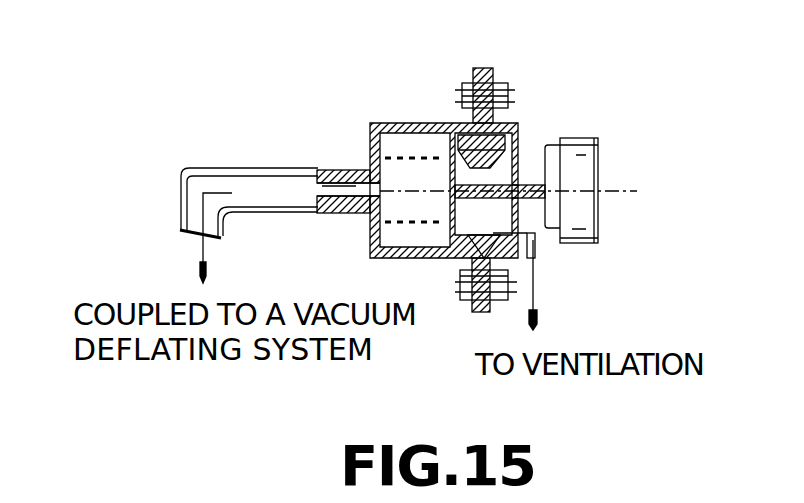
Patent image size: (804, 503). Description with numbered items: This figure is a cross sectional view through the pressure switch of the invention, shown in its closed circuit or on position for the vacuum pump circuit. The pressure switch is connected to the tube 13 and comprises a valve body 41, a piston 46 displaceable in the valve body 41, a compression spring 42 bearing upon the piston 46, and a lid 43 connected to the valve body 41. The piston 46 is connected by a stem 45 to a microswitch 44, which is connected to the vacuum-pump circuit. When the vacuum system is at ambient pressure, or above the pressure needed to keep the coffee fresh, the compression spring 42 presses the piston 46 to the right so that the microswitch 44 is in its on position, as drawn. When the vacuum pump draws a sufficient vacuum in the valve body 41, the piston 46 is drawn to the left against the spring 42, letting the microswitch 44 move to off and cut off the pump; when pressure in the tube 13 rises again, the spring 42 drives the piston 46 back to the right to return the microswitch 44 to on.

The tube 13 is at (229, 168).
The valve body 41 is at (371, 126).
The compression spring 42 is at (415, 158).
The lid 43 is at (526, 178).
The microswitch 44 is at (595, 140).
The stem 45 is at (538, 170).
The piston 46 is at (513, 258).